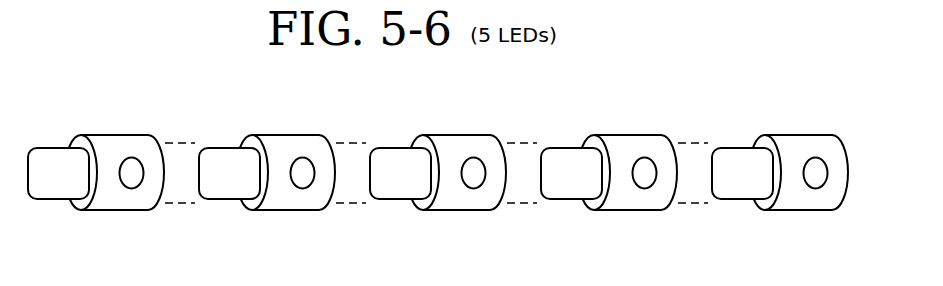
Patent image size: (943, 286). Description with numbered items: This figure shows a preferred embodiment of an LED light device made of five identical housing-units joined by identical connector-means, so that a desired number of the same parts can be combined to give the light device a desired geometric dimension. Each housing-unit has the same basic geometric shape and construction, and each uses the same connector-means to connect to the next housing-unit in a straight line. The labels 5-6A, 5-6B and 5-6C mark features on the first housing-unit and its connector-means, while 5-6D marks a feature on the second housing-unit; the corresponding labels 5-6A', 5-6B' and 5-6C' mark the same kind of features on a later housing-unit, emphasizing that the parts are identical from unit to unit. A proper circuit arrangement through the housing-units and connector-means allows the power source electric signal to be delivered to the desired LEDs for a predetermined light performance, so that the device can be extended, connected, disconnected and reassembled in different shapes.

The LED lens (first LED) 5-6A is at (71, 125).
The mounting hole (first LED) 5-6B is at (103, 222).
The LED housing body (first LED) 5-6C is at (142, 138).
The LED lens (second LED) 5-6D is at (223, 180).
The LED lens (fourth LED) 5-6A' is at (558, 136).
The mounting hole (fourth LED) 5-6B' is at (645, 222).
The LED housing body (fourth LED) 5-6C' is at (640, 135).